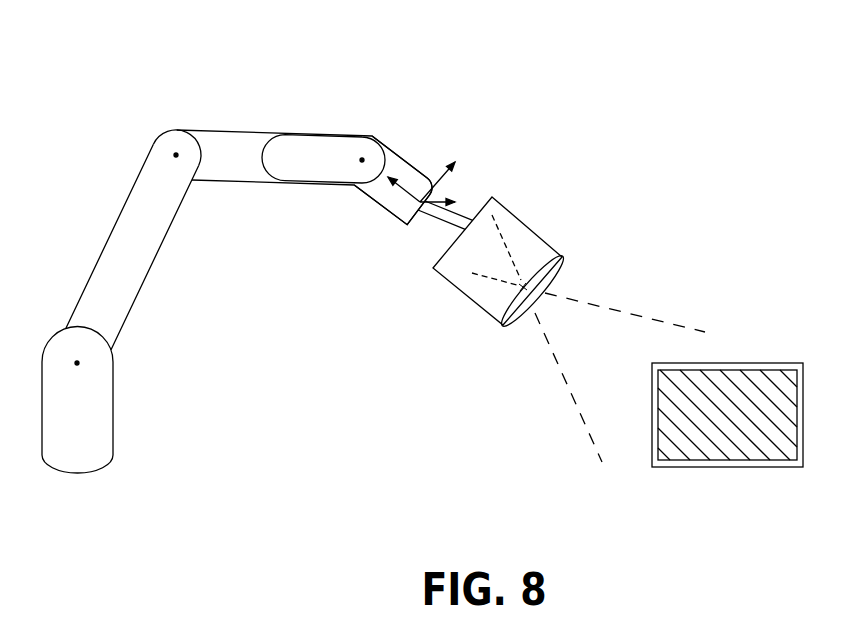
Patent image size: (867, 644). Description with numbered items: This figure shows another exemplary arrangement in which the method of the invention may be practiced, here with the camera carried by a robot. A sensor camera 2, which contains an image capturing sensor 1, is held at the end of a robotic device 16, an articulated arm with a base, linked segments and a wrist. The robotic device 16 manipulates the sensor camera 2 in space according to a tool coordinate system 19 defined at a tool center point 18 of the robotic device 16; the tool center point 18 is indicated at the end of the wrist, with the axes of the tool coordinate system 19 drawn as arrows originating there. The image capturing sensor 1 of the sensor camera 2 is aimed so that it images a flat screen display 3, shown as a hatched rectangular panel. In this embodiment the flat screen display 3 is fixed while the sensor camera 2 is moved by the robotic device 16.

The robotic device 16 is at (232, 152).
The tool center point 18 is at (418, 200).
The tool coordinate system 19 is at (388, 192).
The image capturing sensor 1 is at (553, 292).
The sensor camera 2 is at (478, 309).
The flat screen display 3 is at (752, 408).